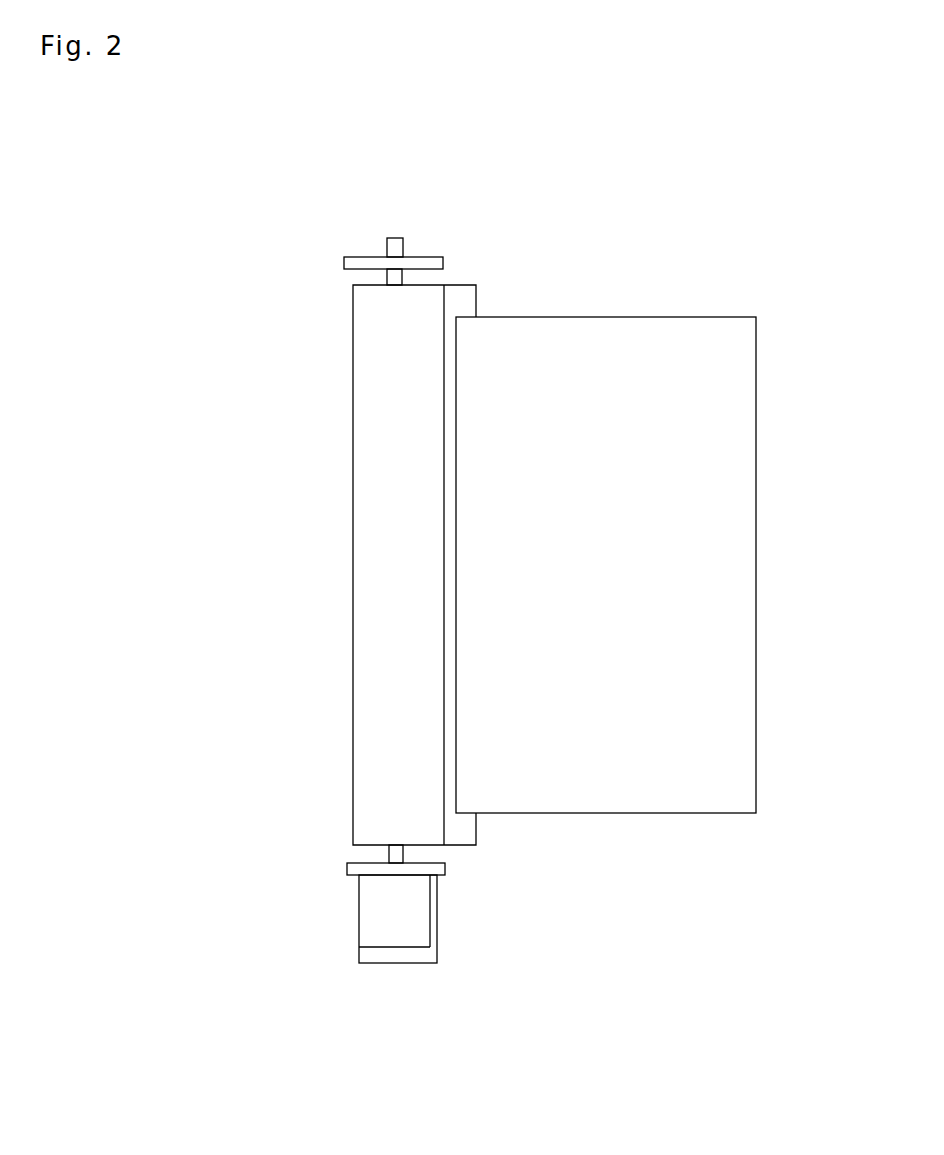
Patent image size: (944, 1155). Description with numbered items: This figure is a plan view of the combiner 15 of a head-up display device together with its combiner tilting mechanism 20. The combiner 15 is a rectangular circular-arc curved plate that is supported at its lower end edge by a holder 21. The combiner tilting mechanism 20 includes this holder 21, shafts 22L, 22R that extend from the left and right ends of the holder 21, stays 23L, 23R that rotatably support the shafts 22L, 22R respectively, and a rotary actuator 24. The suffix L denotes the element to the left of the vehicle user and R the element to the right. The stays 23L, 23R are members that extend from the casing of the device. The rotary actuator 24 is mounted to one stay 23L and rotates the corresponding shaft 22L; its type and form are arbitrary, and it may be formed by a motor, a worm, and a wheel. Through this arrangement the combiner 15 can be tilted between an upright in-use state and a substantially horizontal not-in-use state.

The combiner 15 is at (738, 573).
The combiner tilting mechanism 20 is at (228, 892).
The holder 21 is at (370, 552).
The shaft 22R is at (387, 277).
The shaft 22L is at (392, 852).
The stay 23R is at (356, 260).
The stay 23L is at (347, 868).
The rotary actuator 24 is at (417, 908).